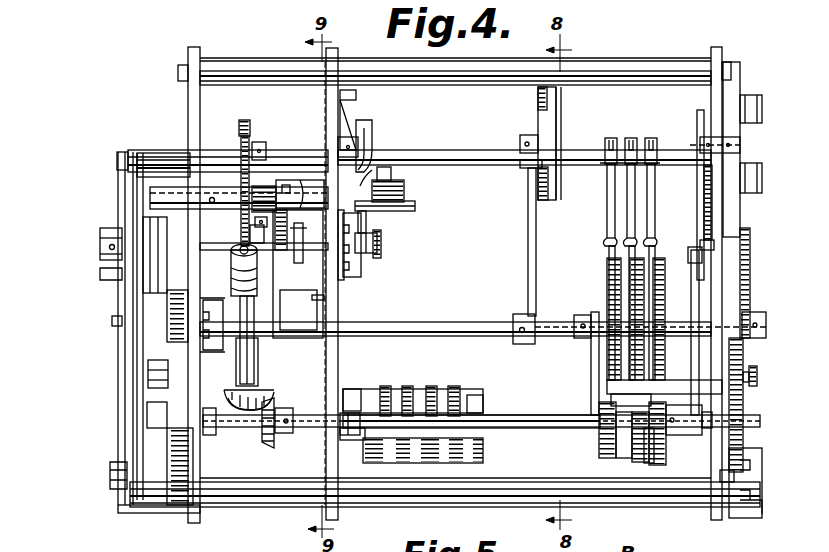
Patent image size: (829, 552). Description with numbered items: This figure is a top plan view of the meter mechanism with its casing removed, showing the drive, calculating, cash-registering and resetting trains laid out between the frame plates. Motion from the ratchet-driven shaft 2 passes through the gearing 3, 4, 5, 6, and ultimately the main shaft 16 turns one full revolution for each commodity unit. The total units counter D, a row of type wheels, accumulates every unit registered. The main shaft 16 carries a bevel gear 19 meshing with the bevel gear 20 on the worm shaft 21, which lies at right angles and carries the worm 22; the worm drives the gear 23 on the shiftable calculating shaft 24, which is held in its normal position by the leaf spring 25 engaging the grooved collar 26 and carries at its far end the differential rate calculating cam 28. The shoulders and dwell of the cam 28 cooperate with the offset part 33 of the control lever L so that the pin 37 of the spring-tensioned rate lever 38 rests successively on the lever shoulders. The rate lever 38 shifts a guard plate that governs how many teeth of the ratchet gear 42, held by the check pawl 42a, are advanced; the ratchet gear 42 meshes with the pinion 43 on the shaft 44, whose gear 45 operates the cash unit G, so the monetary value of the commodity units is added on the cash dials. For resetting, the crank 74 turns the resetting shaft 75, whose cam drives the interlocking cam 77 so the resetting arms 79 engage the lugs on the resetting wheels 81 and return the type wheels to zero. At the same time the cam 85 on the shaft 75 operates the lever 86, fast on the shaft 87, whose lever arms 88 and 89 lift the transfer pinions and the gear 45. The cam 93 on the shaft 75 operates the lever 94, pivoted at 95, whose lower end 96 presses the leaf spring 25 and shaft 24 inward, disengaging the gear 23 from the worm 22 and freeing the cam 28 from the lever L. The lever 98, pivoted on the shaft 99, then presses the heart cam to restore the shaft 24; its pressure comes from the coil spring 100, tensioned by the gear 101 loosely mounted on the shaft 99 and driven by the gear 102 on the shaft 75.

The shaft 2 is at (612, 268).
The gearing 3 is at (728, 478).
The gearing 4 is at (730, 358).
The gearing 5 is at (734, 375).
The gearing 6 is at (744, 233).
The main shaft 16 is at (303, 412).
The bevel gear 19 is at (268, 444).
The bevel gear 20 is at (266, 396).
The worm shaft 21 is at (250, 317).
The worm 22 is at (246, 284).
The gear 23 is at (237, 230).
The calculating shaft 24 is at (366, 262).
The leaf spring 25 is at (376, 228).
The grooved collar 26 is at (386, 250).
The differential rate calculating cam 28 is at (122, 223).
The offset part 33 is at (112, 273).
The pin 37 is at (114, 322).
The rate lever 38 is at (146, 332).
The ratchet gear 42 is at (174, 338).
The check pawl 42a is at (160, 380).
The pinion 43 is at (168, 405).
The shaft 44 is at (508, 414).
The gear 45 is at (656, 448).
The crank 74 is at (732, 196).
The resetting shaft 75 is at (578, 152).
The interlocking cam 77 is at (697, 120).
The resetting arms 79 is at (640, 231).
The resetting wheels 81 is at (638, 300).
The cam 85 is at (538, 118).
The lever 86 is at (528, 200).
The shaft 87 is at (448, 328).
The lever arm 88 is at (591, 353).
The lever arm 89 is at (694, 306).
The cam 93 is at (362, 125).
The lever 94 is at (406, 204).
The pivot 95 is at (390, 168).
The lower end 96 is at (286, 340).
The lever 98 is at (358, 300).
The shaft 99 is at (203, 160).
The coil spring 100 is at (262, 182).
The gear 101 is at (238, 192).
The gear 102 is at (248, 124).
The total units counter D is at (417, 390).
The cash unit G is at (644, 466).
The control lever L is at (122, 440).